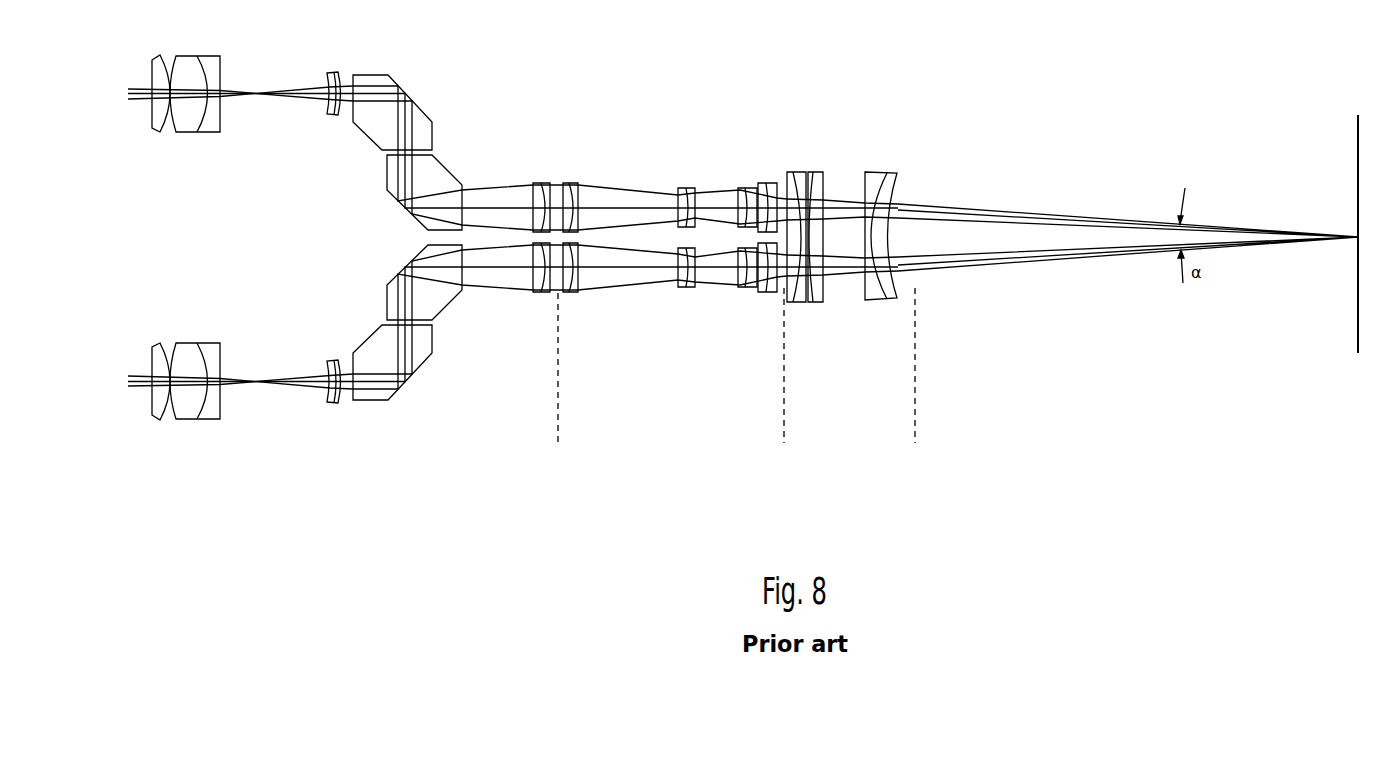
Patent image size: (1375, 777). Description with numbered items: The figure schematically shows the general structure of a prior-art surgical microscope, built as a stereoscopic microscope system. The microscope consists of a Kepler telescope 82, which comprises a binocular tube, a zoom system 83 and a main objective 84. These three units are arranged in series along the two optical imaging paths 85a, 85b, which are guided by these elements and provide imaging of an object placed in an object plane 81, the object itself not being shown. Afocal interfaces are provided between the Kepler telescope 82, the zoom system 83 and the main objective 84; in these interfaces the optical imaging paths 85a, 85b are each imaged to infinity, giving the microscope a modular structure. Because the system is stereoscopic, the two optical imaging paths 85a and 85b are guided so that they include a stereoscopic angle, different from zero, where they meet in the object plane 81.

The object plane 81 is at (1358, 303).
The Kepler telescope 82 is at (558, 447).
The zoom system 83 is at (784, 447).
The main objective 84 is at (915, 447).
The optical imaging path 85a is at (1061, 217).
The optical imaging path 85b is at (1061, 258).